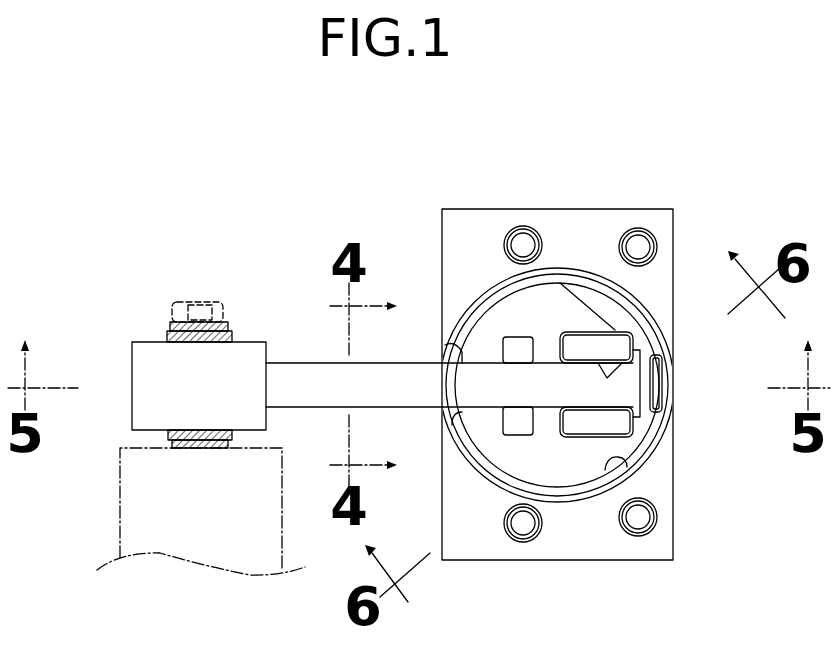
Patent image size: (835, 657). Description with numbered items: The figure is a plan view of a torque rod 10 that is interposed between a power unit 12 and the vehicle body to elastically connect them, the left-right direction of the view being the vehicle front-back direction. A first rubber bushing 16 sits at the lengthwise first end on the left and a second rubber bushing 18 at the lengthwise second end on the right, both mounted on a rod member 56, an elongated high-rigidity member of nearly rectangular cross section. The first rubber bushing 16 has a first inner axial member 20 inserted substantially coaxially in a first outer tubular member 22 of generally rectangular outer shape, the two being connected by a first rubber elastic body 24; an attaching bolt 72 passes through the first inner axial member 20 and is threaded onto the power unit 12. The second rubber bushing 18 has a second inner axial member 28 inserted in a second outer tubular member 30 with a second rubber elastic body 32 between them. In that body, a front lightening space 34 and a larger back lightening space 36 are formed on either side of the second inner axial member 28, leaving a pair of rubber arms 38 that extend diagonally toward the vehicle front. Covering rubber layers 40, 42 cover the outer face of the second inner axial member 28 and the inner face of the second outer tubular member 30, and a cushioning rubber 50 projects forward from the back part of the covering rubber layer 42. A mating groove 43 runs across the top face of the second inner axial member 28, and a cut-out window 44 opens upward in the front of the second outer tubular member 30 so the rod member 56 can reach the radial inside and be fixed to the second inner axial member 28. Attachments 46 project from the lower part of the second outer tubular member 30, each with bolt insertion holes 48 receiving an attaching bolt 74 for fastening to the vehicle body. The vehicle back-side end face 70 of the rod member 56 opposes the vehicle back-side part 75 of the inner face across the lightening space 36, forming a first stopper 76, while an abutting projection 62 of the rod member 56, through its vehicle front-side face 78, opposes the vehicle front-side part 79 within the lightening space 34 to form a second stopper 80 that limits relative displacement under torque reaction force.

The torque rod 10 is at (719, 156).
The power unit 12 is at (205, 535).
The first rubber bushing 16 is at (112, 310).
The second rubber bushing 18 is at (697, 230).
The first inner axial member 20 is at (218, 330).
The first outer tubular member 22 is at (147, 392).
The first rubber elastic body 24 is at (172, 450).
The second inner axial member 28 is at (610, 423).
The second outer tubular member 30 is at (436, 213).
The second rubber elastic body 32 is at (598, 303).
The lightening space 34 is at (555, 342).
The lightening space 36 is at (622, 462).
The rubber arm 38 is at (553, 300).
The covering rubber layer 40 is at (615, 330).
The covering rubber layer 42 is at (493, 420).
The mating groove 43 is at (640, 322).
The cut-out window 44 is at (460, 352).
The attachment 46 is at (470, 218).
The bolt insertion hole 48 is at (521, 243).
The cushioning rubber 50 is at (656, 406).
The rod member 56 is at (291, 346).
The abutting projection 62 is at (568, 408).
The vehicle back-side end face 70 is at (656, 384).
The attaching bolt 72 is at (188, 300).
The attaching bolt 74 is at (512, 238).
The vehicle back-side part 75 is at (654, 378).
The first stopper 76 is at (672, 339).
The vehicle front-side face 78 is at (492, 445).
The vehicle front-side part 79 is at (458, 418).
The second stopper 80 is at (478, 320).